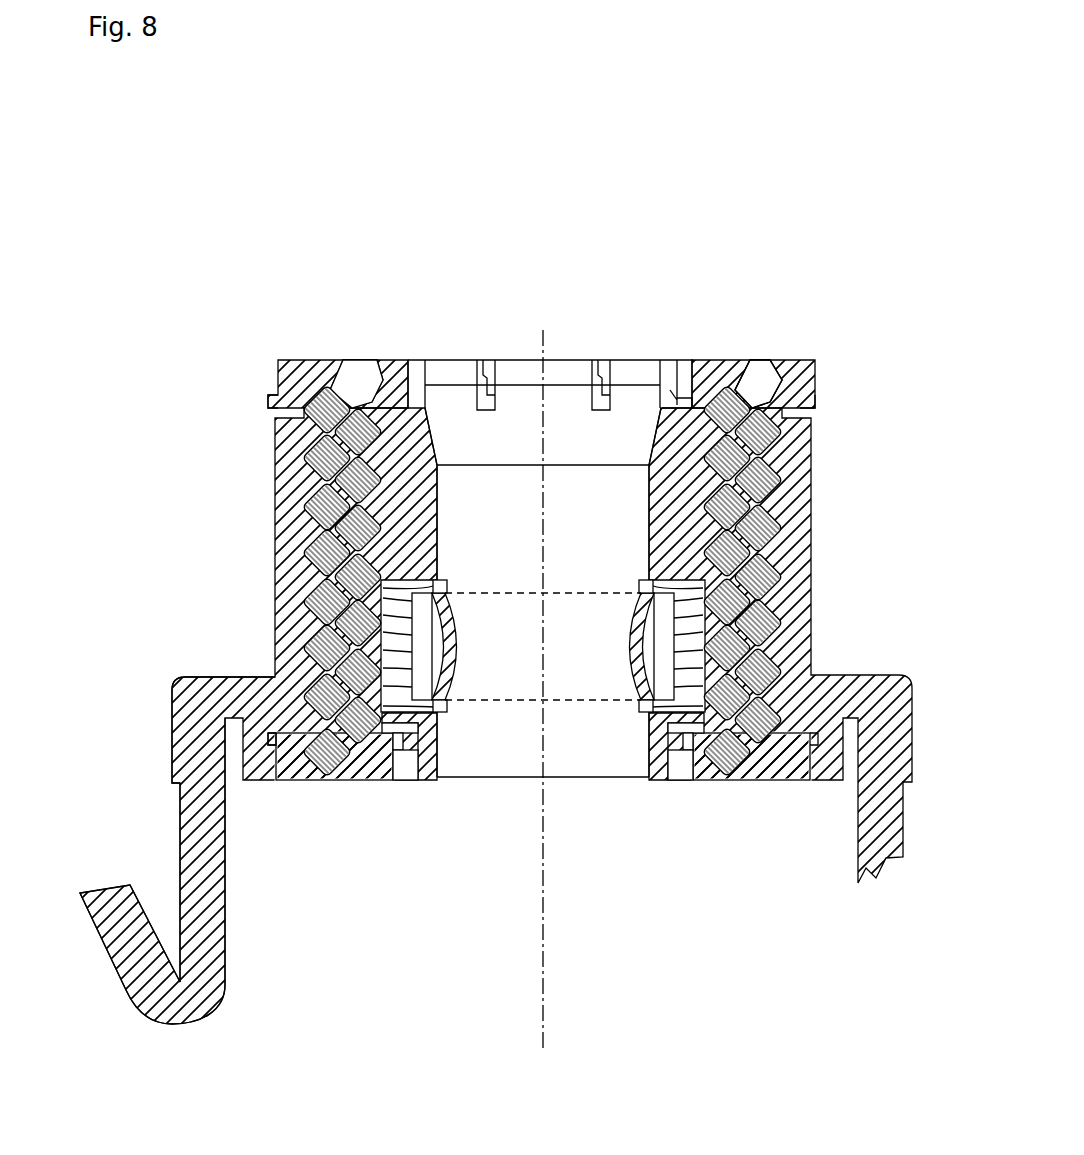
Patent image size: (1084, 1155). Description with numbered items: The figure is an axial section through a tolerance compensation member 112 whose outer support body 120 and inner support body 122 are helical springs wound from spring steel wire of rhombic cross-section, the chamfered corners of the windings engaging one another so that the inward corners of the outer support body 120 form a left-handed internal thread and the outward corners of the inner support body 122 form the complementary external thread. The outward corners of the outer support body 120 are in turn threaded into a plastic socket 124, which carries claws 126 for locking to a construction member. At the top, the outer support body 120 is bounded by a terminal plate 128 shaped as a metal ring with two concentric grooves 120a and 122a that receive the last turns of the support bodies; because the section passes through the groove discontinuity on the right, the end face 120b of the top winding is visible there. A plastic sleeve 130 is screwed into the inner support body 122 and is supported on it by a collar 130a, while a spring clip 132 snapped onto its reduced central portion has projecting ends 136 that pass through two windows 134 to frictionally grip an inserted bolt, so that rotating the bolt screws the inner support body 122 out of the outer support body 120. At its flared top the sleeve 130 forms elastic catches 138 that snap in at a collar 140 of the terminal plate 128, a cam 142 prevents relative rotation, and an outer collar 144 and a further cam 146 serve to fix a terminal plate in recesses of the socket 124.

The tolerance compensation member 112 is at (614, 230).
The outer support body 120 is at (292, 507).
The annular groove 120a is at (320, 392).
The end face 120b is at (813, 412).
The inner support body 122 is at (394, 527).
The inner annular groove 122a is at (712, 380).
The plastic socket 124 is at (273, 617).
The claws 126 is at (222, 964).
The terminal plate 128 is at (792, 360).
The plastic sleeve 130 is at (656, 506).
The collar 130a is at (410, 762).
The spring clip 132 is at (500, 706).
The windows 134 is at (448, 586).
The projecting ends 136 is at (455, 649).
The elastic catches 138 is at (676, 372).
The collar 140 is at (676, 402).
The cam 142 is at (398, 360).
The collar 144 is at (268, 400).
The cam 146 is at (765, 393).